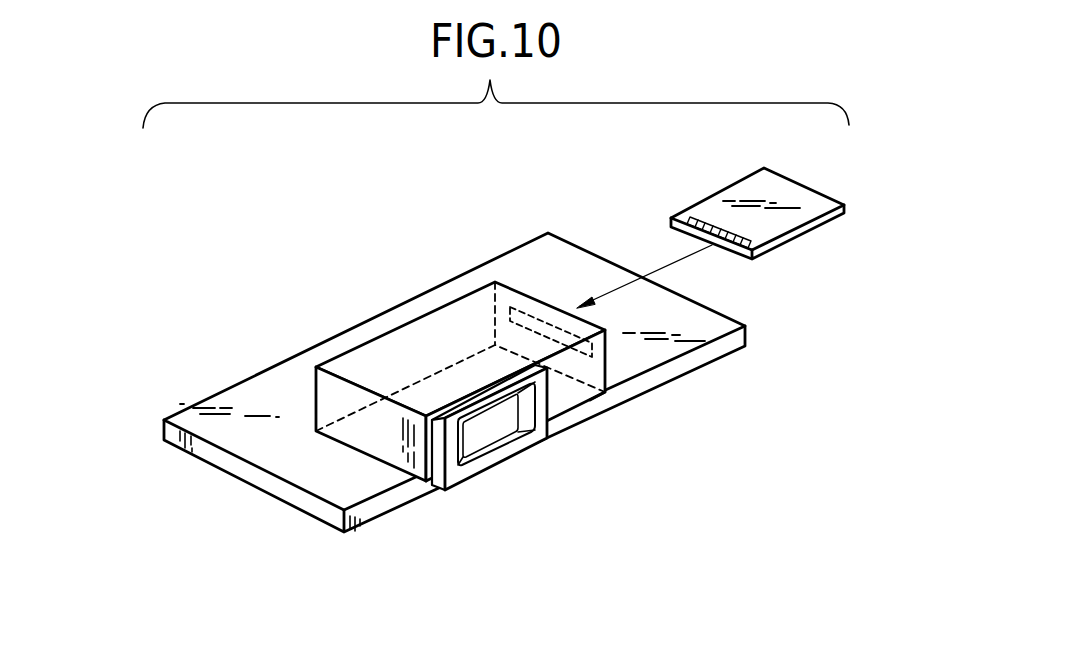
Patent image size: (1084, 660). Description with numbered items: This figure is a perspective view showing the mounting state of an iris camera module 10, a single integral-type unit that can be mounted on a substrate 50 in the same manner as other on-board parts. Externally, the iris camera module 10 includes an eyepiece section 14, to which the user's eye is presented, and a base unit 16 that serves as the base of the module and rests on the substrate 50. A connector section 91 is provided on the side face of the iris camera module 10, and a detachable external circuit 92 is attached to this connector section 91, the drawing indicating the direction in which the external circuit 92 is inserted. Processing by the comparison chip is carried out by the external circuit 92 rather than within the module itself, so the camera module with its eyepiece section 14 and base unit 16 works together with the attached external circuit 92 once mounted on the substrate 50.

The iris camera module 10 is at (443, 297).
The eyepiece section 14 is at (533, 447).
The base unit 16 is at (608, 378).
The substrate 50 is at (723, 360).
The connector section 91 is at (526, 298).
The external circuit 92 is at (803, 238).